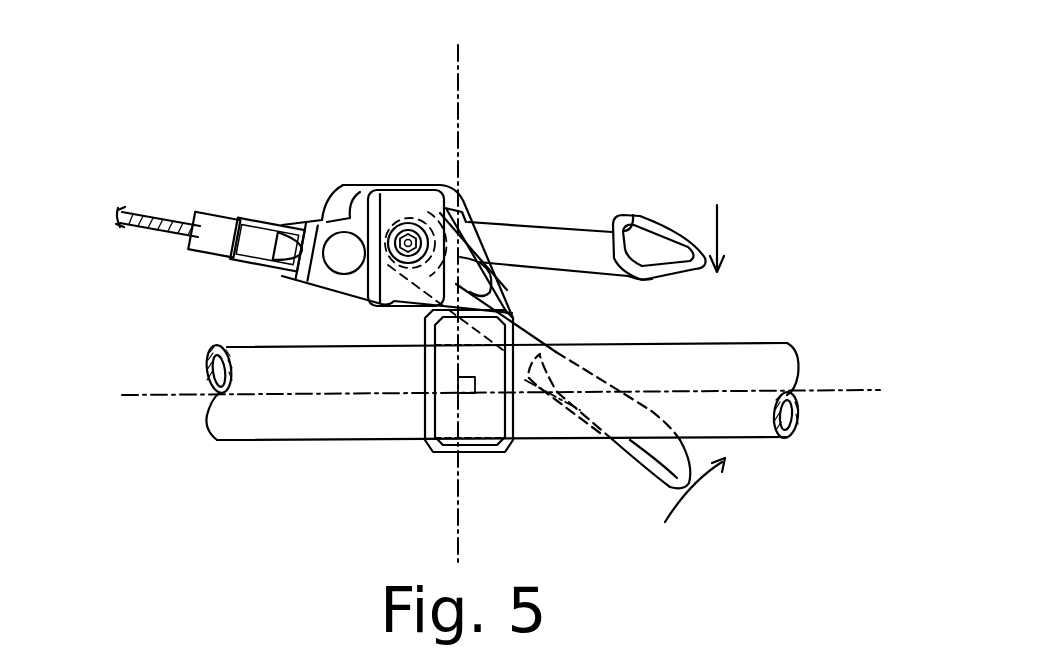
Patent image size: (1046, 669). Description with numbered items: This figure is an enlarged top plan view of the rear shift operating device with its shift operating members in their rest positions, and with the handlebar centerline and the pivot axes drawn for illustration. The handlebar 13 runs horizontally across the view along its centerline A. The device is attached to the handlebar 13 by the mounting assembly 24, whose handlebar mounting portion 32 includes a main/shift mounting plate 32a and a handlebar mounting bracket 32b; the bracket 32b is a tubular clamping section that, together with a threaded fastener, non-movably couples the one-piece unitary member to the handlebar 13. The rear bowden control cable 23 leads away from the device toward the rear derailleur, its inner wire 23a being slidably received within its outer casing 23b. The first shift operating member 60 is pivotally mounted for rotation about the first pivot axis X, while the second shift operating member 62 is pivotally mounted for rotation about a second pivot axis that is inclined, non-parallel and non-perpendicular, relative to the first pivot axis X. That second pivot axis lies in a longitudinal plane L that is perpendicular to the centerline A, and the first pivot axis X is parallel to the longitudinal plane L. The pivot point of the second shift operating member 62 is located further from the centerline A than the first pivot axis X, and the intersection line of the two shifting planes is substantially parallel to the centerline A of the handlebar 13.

The handlebar 13 is at (280, 443).
The rear bowden control cable 23 is at (182, 278).
The inner wire 23a is at (158, 232).
The outer casing 23b is at (205, 252).
The mounting assembly 24 is at (518, 289).
The handlebar mounting portion 32 is at (451, 411).
The main/shift mounting plate 32a is at (390, 307).
The handlebar mounting bracket 32b is at (487, 453).
The first shift operating member 60 is at (620, 455).
The second shift operating member 62 is at (641, 280).
The first pivot axis X is at (408, 237).
The centerline A is at (122, 395).
The longitudinal plane L is at (458, 52).